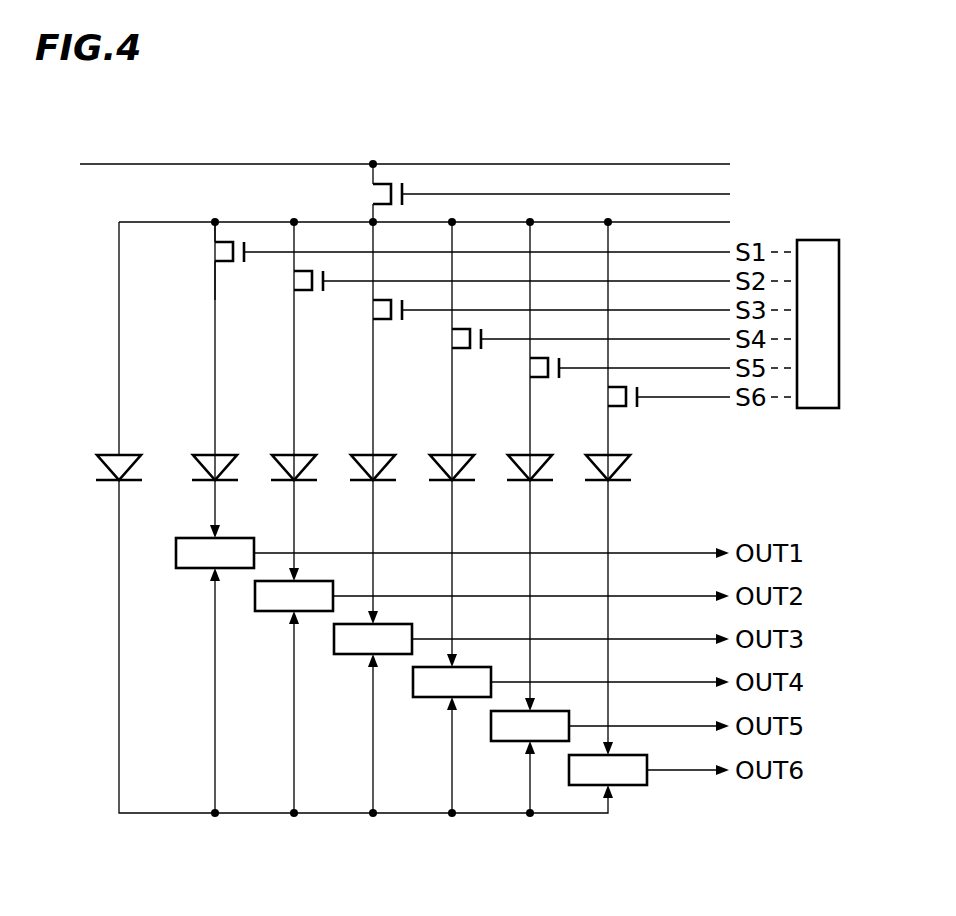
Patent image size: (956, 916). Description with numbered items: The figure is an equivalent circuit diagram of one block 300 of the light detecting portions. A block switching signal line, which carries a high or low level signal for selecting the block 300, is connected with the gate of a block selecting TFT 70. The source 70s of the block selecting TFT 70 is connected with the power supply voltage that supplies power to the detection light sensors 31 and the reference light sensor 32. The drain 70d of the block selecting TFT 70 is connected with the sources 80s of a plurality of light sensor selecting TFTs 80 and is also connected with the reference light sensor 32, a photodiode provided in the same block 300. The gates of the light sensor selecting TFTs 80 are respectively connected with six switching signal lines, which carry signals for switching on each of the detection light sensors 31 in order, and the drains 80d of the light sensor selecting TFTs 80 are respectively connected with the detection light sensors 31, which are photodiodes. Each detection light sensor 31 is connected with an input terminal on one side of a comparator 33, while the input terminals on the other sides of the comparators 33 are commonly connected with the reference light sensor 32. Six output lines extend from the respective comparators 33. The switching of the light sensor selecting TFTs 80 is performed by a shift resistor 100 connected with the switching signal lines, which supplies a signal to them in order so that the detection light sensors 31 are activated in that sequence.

The block 300 is at (345, 853).
The block selecting TFT 70 is at (370, 183).
The source of block selecting TFT 70s is at (376, 180).
The drain of block selecting TFT 70d is at (372, 208).
The light sensor selecting TFT 80 is at (213, 252).
The source of light sensor selecting TFT 80s is at (213, 233).
The drain of light sensor selecting TFT 80d is at (212, 277).
The reference light sensor 32 is at (108, 455).
The detection light sensor 31 is at (228, 468).
The comparator 33 is at (197, 570).
The shift resistor 100 is at (818, 240).